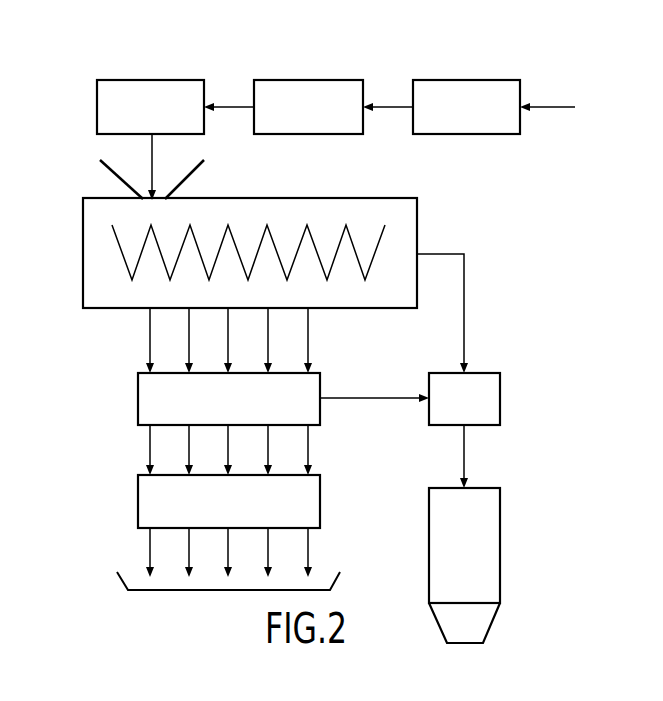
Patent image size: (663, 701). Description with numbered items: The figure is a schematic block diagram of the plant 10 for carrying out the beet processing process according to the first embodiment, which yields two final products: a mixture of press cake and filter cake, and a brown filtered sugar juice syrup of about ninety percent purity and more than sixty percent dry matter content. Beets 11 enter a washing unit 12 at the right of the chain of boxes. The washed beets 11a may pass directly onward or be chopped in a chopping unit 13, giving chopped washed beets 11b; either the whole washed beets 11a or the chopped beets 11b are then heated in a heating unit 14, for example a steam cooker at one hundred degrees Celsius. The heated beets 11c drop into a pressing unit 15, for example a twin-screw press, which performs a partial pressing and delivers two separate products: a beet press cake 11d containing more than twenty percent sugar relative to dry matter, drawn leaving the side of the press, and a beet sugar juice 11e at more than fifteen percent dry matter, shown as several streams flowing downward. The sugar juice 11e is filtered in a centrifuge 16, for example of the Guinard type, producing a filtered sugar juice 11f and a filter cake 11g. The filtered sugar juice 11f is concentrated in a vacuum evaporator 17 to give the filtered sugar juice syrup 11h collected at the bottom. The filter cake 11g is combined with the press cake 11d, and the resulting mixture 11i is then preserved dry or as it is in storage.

The plant 10 is at (88, 33).
The beets 11 is at (538, 106).
The washed beets 11a is at (381, 106).
The chopped washed beets 11b is at (229, 106).
The heated whole or chopped beets 11c is at (153, 150).
The beet press cake 11d is at (465, 312).
The beet sugar juice 11e is at (308, 330).
The filtered sugar juice 11f is at (308, 438).
The filter cake 11g is at (367, 397).
The filtered sugar juice syrup 11h is at (308, 543).
The mixture of press cake and filter cake 11i is at (465, 447).
The washing unit 12 is at (457, 116).
The chopping unit 13 is at (299, 116).
The heating unit 14 is at (141, 116).
The pressing unit 15 is at (350, 197).
The centrifuge 16 is at (220, 409).
The vacuum evaporator 17 is at (220, 511).